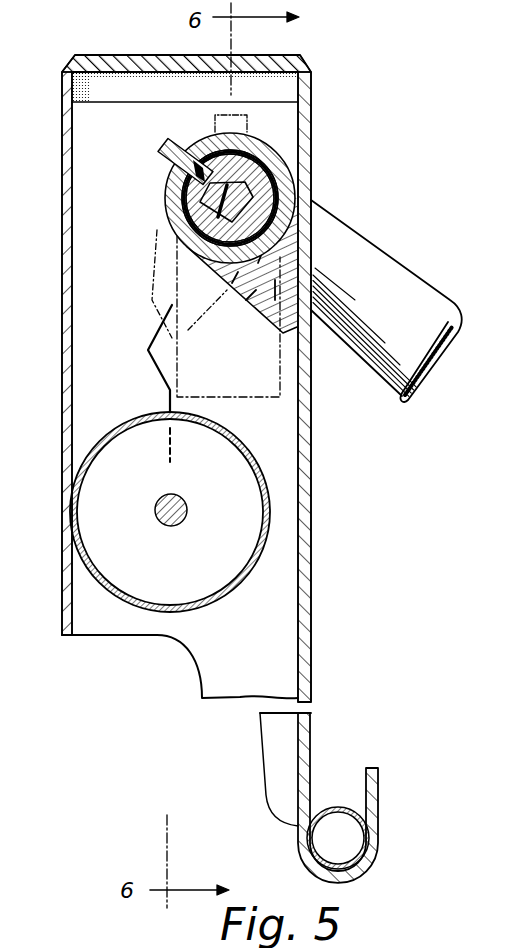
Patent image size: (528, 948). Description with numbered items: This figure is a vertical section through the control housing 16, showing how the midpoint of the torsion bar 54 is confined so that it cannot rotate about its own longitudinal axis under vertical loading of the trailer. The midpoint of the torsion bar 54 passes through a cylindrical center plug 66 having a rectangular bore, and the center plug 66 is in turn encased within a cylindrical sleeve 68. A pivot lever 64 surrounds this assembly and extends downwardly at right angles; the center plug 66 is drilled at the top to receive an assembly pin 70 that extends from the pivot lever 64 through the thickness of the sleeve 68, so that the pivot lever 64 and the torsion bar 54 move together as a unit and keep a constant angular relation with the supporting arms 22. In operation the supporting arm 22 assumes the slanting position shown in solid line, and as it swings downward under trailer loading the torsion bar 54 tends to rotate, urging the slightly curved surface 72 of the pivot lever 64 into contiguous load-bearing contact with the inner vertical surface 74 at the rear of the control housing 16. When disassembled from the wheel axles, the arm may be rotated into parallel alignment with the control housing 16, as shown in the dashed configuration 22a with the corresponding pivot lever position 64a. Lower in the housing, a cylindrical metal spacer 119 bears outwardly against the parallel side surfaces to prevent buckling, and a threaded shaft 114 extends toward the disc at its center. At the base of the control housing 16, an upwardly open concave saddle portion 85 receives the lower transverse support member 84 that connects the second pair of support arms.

The control housing 16 is at (58, 118).
The supporting arm 22 is at (376, 255).
The dashed configuration of support arm 22a is at (160, 352).
The torsion bar 54 is at (198, 190).
The pivot lever 64 is at (263, 312).
The pivot lever position 64a is at (154, 276).
The center plug 66 is at (193, 210).
The cylindrical sleeve 68 is at (296, 176).
The assembly pin 70 is at (165, 152).
The slightly curved surface 72 is at (302, 232).
The inner vertical surface 74 is at (292, 394).
The lower transverse support member 84 is at (356, 807).
The concave saddle portion 85 is at (377, 772).
The threaded shaft 114 is at (171, 526).
The cylindrical metal spacer 119 is at (223, 428).